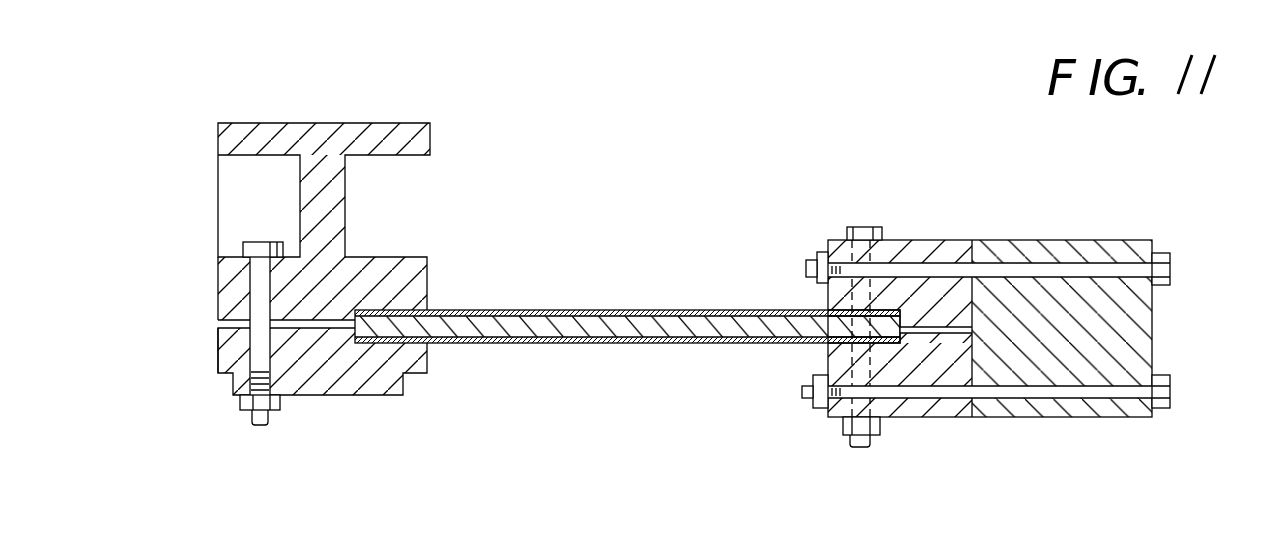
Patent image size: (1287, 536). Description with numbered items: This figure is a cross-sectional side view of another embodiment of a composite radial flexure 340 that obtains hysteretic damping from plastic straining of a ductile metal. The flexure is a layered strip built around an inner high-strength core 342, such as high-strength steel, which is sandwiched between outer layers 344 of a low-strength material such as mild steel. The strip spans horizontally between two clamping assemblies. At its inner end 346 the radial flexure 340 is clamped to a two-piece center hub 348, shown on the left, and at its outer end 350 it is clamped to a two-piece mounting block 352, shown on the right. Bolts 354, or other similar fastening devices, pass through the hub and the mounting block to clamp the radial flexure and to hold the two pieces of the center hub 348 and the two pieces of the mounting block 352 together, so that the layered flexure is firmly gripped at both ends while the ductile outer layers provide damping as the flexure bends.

The composite radial flexure 340 is at (688, 286).
The inner high-strength core 342 is at (520, 309).
The outer layers 344 is at (618, 309).
The inner end 346 is at (372, 308).
The two-piece center hub 348 is at (216, 278).
The outer end 350 is at (258, 242).
The two-piece mounting block 352 is at (943, 417).
The bolts 354 is at (857, 226).